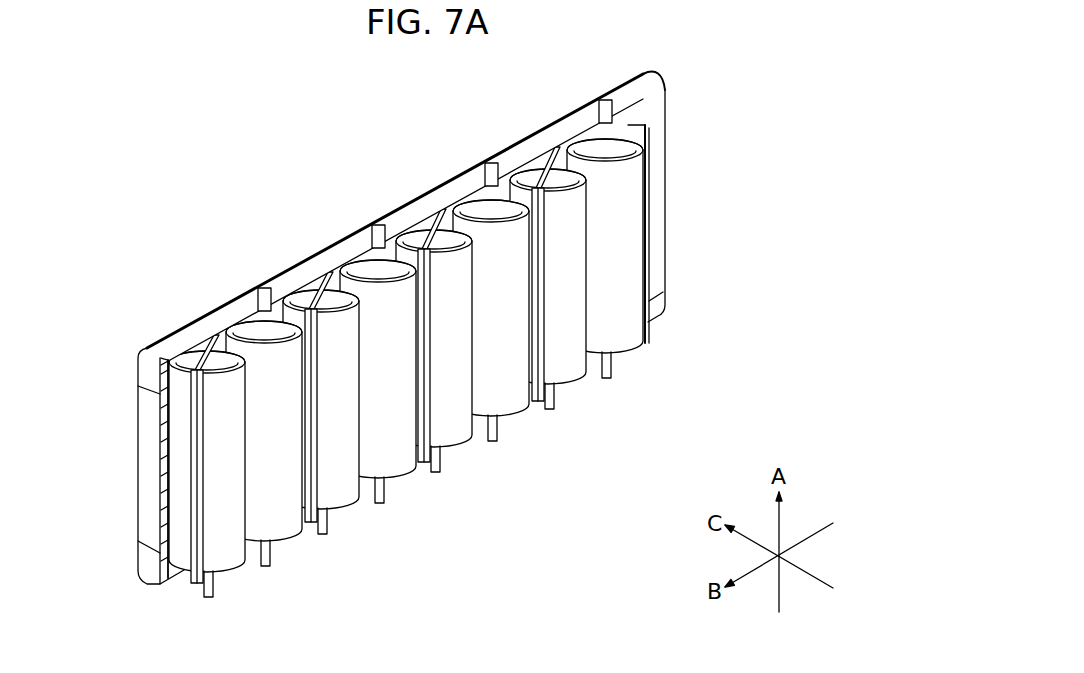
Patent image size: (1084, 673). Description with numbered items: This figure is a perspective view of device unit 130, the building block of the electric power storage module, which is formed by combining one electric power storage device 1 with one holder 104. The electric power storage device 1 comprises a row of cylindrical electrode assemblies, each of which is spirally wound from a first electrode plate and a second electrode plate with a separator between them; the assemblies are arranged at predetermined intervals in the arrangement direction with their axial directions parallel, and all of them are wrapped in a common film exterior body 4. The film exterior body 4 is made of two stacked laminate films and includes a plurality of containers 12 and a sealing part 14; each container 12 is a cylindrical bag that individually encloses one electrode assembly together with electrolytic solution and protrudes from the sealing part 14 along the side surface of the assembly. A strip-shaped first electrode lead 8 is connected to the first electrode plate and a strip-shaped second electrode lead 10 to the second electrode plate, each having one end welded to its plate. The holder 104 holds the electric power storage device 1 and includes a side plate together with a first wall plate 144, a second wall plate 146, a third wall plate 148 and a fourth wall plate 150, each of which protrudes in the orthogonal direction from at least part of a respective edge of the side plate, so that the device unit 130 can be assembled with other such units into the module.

The electric power storage device 1 is at (648, 298).
The film exterior body 4 is at (544, 339).
The first electrode lead 8 is at (608, 94).
The second electrode lead 10 is at (604, 381).
The container 12 is at (501, 344).
The sealing part 14 is at (535, 410).
The holder 104 is at (150, 585).
The device unit 130 is at (397, 351).
The first wall plate 144 is at (537, 138).
The second wall plate 146 is at (175, 583).
The third wall plate 148 is at (668, 157).
The fourth wall plate 150 is at (150, 472).